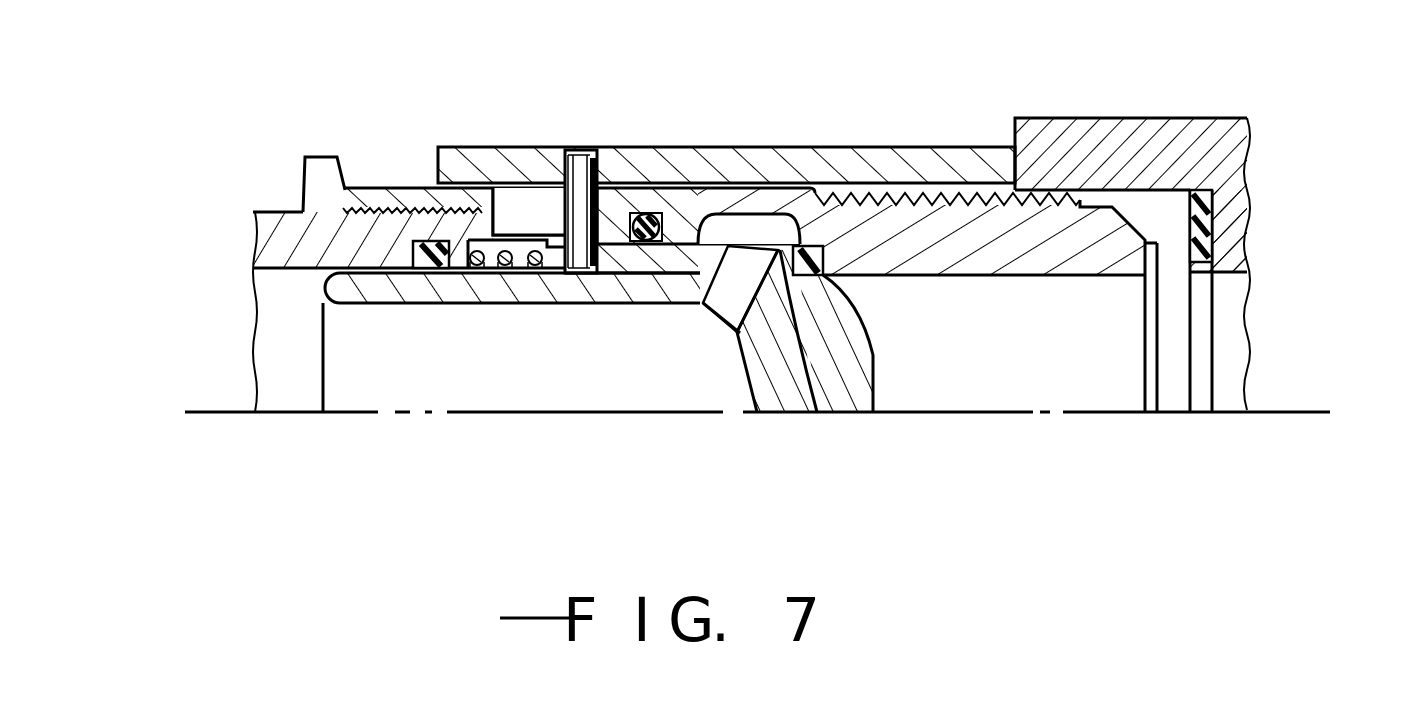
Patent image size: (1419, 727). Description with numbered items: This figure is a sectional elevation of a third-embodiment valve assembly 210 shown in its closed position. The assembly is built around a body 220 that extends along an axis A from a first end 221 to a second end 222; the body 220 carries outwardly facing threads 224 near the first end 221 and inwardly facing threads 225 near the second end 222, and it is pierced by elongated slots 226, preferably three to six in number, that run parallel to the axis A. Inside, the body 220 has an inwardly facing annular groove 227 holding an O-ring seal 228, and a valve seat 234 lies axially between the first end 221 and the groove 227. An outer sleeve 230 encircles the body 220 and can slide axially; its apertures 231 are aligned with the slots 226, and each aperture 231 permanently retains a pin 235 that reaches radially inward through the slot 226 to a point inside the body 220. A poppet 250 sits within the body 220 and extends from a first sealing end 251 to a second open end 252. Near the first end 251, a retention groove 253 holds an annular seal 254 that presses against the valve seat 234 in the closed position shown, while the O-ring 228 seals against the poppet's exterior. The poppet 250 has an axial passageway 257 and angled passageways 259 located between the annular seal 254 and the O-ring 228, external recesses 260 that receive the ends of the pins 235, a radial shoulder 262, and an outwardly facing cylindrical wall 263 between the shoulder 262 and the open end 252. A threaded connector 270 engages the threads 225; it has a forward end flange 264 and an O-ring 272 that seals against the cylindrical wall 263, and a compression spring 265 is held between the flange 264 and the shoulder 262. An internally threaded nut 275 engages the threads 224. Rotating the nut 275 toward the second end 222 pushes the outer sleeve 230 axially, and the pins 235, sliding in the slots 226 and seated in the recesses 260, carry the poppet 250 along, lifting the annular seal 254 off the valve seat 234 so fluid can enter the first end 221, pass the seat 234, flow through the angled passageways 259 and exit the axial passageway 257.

The valve assembly 210 is at (795, 95).
The body 220 is at (1175, 325).
The first end 221 is at (1210, 212).
The second end 222 is at (362, 186).
The outwardly facing threads 224 is at (997, 200).
The inwardly facing threads 225 is at (385, 186).
The slots 226 is at (550, 147).
The annular groove 227 is at (633, 147).
The O-ring seal 228 is at (608, 272).
The outer sleeve 230 is at (907, 147).
The apertures 231 is at (607, 147).
The valve seat 234 is at (812, 237).
The pin 235 is at (552, 330).
The poppet 250 is at (388, 320).
The first sealing end 251 is at (880, 412).
The second open end 252 is at (407, 262).
The retention groove 253 is at (812, 278).
The annular seal 254 is at (818, 385).
The axial passageway 257 is at (340, 370).
The angled passageways 259 is at (727, 305).
The recesses 260 is at (575, 275).
The radial shoulder 262 is at (548, 263).
The cylindrical wall 263 is at (330, 303).
The forward end flange 264 is at (410, 258).
The compression spring 265 is at (537, 205).
The threaded connector 270 is at (252, 210).
The O-ring 272 is at (330, 158).
The nut 275 is at (1143, 133).
The axis A is at (1320, 378).